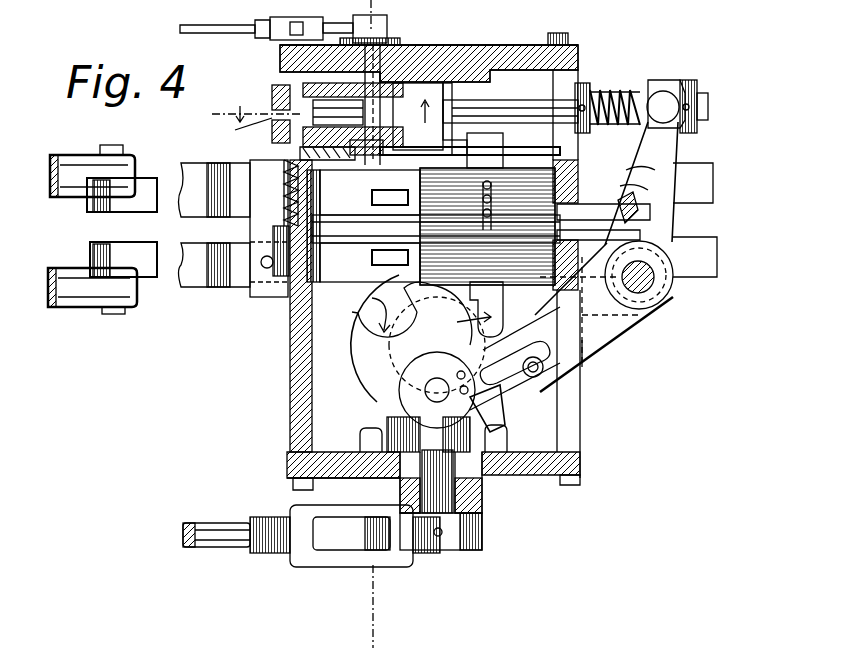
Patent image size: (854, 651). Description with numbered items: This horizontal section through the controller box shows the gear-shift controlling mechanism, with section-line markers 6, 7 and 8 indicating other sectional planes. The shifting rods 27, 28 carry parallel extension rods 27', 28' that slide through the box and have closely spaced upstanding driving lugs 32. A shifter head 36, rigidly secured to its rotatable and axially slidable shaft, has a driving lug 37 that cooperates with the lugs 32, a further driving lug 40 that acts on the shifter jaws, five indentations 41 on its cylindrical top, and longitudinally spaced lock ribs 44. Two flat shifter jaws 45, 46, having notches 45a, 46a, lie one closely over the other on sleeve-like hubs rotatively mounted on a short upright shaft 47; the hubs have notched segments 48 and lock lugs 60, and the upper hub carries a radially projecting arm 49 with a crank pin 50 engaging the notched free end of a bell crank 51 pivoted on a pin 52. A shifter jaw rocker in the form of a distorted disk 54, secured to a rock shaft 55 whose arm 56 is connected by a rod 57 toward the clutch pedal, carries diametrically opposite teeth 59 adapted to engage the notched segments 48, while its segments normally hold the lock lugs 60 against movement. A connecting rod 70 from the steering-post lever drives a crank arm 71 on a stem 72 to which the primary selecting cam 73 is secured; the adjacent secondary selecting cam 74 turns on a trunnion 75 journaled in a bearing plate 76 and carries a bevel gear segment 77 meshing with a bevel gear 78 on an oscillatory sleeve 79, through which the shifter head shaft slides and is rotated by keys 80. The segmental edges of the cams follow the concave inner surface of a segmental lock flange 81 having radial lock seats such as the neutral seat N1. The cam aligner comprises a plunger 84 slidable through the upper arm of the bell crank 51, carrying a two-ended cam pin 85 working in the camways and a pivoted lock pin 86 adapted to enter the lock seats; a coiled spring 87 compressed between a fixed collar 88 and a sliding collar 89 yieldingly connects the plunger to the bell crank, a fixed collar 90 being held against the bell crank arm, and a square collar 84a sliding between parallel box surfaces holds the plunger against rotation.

The section line 6- 6 is at (362, 324).
The section line 7- 7 is at (256, 108).
The section line 8- 8 is at (449, 69).
The neutral lock seat N1 is at (242, 131).
The shifting rod 27 is at (100, 294).
The extension rod 27' is at (203, 287).
The shifting rod 28 is at (100, 190).
The extension rod 28' is at (211, 177).
The driving lugs 32 is at (387, 200).
The shifter head 36 is at (512, 180).
The driving lug 37 is at (503, 140).
The driving lug 40 is at (458, 321).
The indentations 41 is at (497, 234).
The lock ribs 44 is at (485, 228).
The shifter jaw 45 is at (355, 376).
The notch 45a is at (362, 312).
The shifter jaw 46 is at (500, 407).
The notch 46a is at (478, 300).
The upright shaft 47 is at (430, 391).
The notched segments 48 is at (403, 397).
The radially projecting arm 49 is at (540, 392).
The crank pin 50 is at (583, 366).
The bell crank 51 is at (660, 158).
The pivot pin 52 is at (647, 285).
The shifter jaw rocker 54 is at (390, 480).
The rock shaft 55 is at (440, 492).
The arm 56 is at (418, 540).
The rod 57 is at (218, 548).
The teeth 59 is at (508, 438).
The lock lugs 60 is at (452, 397).
The connecting rod 70 is at (223, 33).
The crank arm 71 is at (277, 45).
The stem 72 is at (387, 29).
The primary selecting cam 73 is at (293, 82).
The secondary selecting cam 74 is at (298, 151).
The trunnion 75 is at (371, 166).
The bearing plate 76 is at (452, 147).
The bevel gear segment 77 is at (277, 167).
The bevel gear 78 is at (283, 203).
The oscillatory sleeve 79 is at (280, 272).
The keys 80 is at (355, 245).
The lock flange 81 is at (290, 97).
The plunger 84 is at (517, 107).
The square collar 84a is at (447, 123).
The cam pin 85 is at (430, 48).
The lock pin 86 is at (280, 125).
The coiled spring 87 is at (628, 87).
The fixed collar 88 is at (578, 133).
The sliding collar 89 is at (647, 83).
The fixed collar 90 is at (697, 83).